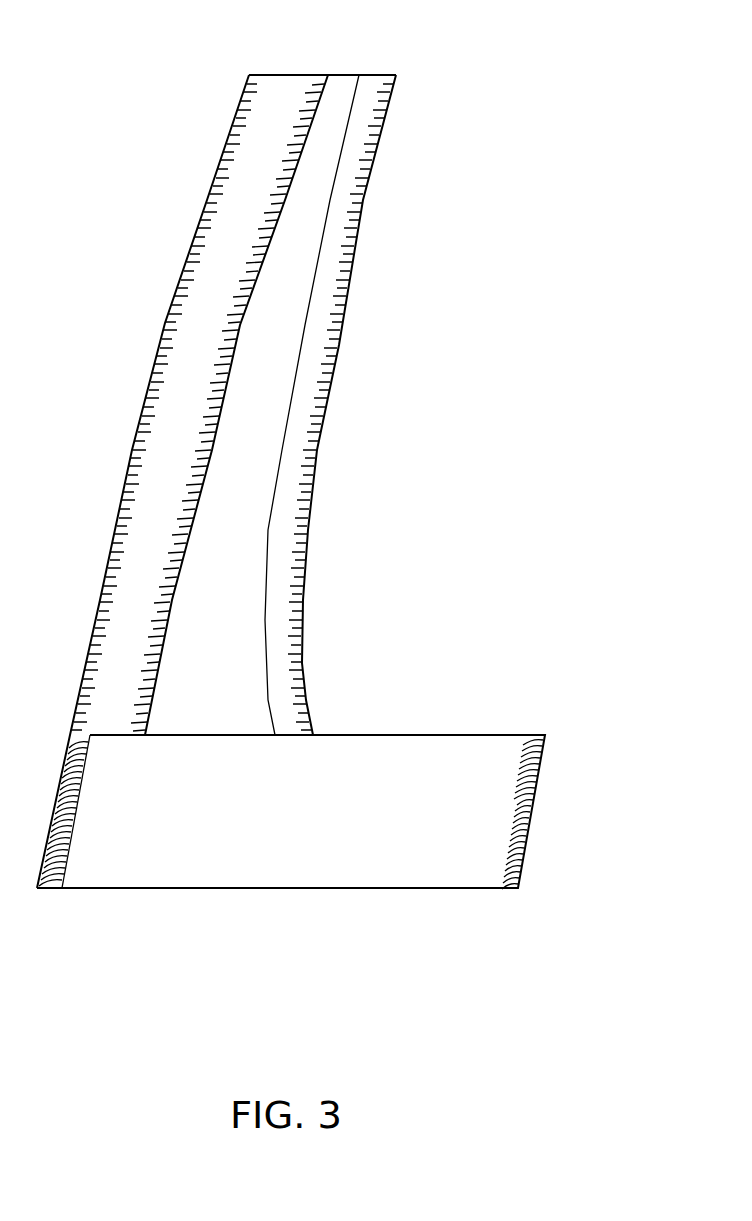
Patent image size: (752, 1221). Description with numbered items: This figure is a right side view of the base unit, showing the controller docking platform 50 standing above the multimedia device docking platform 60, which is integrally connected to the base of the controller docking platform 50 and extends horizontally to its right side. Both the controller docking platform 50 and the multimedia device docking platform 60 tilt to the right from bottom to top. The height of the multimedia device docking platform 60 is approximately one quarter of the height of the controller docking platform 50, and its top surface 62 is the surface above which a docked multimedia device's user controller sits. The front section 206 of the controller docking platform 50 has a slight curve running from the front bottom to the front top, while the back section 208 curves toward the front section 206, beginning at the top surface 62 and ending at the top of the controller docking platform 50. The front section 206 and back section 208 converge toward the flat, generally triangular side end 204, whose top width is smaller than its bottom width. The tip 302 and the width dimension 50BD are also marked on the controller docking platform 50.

The controller docking platform 50 is at (291, 464).
The airfoil tip 302 is at (370, 75).
The front section 206 is at (152, 323).
The back section 208 is at (352, 343).
The side end 204 is at (238, 530).
The multimedia device docking platform 60 is at (311, 747).
The top surface 62 is at (360, 735).
The airfoil width dimension 50BD is at (385, 25).